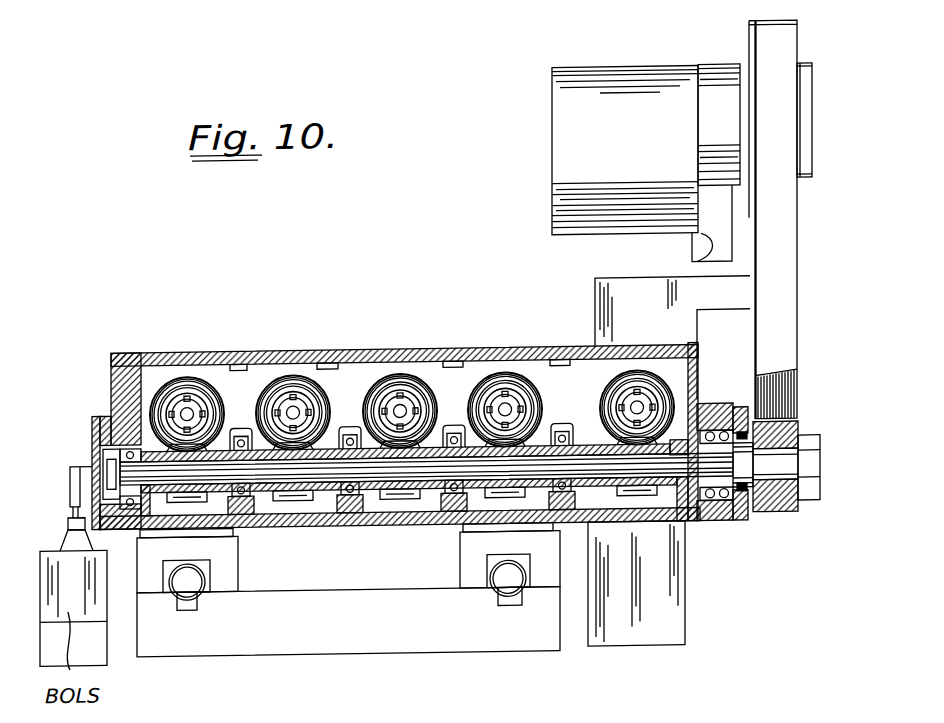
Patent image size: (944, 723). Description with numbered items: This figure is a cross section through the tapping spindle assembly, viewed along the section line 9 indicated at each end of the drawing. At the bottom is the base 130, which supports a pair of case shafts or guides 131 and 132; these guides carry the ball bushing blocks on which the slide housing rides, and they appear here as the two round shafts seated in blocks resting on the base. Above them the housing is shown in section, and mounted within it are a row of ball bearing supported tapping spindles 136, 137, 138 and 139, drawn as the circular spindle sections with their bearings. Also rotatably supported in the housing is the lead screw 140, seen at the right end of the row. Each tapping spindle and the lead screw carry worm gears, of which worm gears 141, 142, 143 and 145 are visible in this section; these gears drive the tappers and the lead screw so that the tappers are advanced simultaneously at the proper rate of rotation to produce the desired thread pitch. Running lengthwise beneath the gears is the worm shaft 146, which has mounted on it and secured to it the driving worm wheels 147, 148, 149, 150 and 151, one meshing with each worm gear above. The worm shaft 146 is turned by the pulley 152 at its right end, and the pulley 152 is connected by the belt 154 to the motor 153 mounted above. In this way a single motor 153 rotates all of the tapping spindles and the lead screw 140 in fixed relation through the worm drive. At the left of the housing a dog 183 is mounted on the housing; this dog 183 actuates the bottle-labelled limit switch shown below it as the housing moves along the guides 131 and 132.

The section line 9- 9 is at (45, 374).
The base 130 is at (370, 642).
The case shaft or guide 131 is at (503, 585).
The case shaft or guide 132 is at (178, 586).
The tapping spindle 136 is at (507, 411).
The tapping spindle 137 is at (403, 410).
The tapping spindle 138 is at (295, 409).
The tapping spindle 139 is at (190, 408).
The lead screw 140 is at (640, 409).
The worm gear 141 is at (514, 374).
The worm gear 142 is at (396, 373).
The worm gear 143 is at (285, 373).
The worm gear 145 is at (180, 373).
The worm shaft 146 is at (442, 472).
The driving worm wheel 147 is at (633, 491).
The driving worm wheel 148 is at (527, 493).
The driving worm wheel 149 is at (417, 496).
The driving worm wheel 150 is at (312, 496).
The driving worm wheel 151 is at (200, 493).
The pulley 152 is at (767, 508).
The motor 153 is at (646, 98).
The belt 154 is at (797, 334).
The dog 183 is at (73, 475).